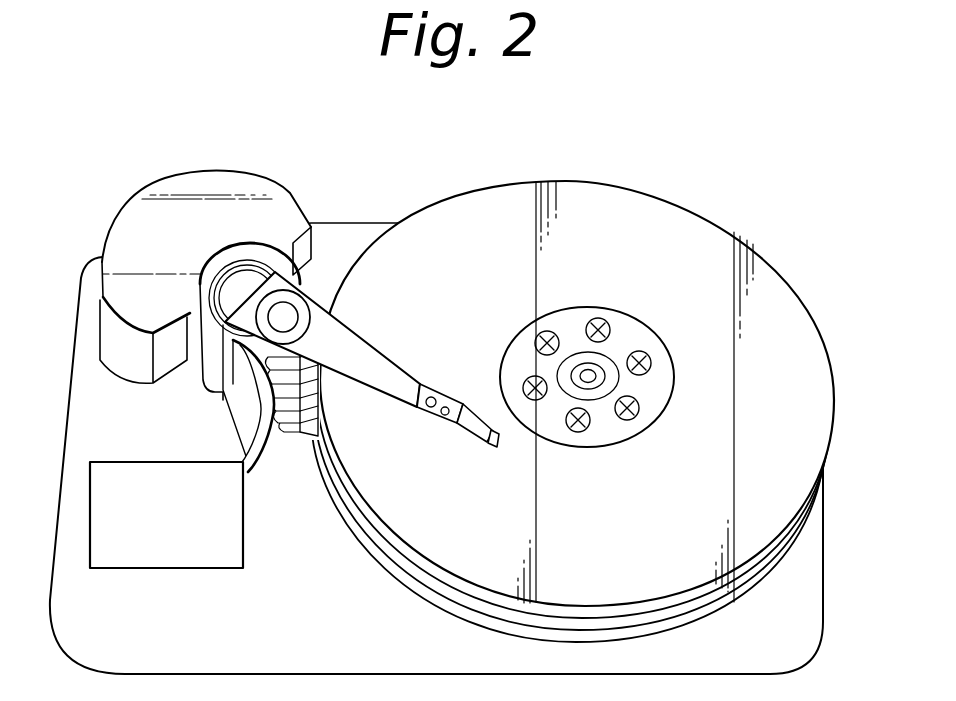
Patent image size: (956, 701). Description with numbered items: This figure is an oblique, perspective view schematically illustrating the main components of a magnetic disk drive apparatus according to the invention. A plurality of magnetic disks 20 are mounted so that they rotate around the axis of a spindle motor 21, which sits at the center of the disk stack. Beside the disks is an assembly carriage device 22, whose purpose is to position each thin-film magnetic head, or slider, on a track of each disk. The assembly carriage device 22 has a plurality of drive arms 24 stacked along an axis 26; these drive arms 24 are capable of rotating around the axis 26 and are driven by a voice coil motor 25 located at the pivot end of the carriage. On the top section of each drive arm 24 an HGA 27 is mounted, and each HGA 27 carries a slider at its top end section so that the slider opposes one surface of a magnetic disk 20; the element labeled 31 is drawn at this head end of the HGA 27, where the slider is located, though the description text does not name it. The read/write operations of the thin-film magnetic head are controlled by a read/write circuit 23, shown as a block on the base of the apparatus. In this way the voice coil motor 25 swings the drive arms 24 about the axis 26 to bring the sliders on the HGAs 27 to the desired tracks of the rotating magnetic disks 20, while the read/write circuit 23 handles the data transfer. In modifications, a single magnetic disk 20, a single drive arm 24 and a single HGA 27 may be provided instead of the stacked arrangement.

The magnetic disks 20 is at (739, 227).
The spindle motor 21 is at (598, 375).
The assembly carriage device 22 is at (233, 188).
The read/write circuit 23 is at (164, 572).
The drive arms 24 is at (347, 347).
The voice coil motor (VCM) 25 is at (197, 357).
The axis 26 is at (288, 315).
The HGA 27 is at (437, 414).
The head slider 31 is at (491, 448).